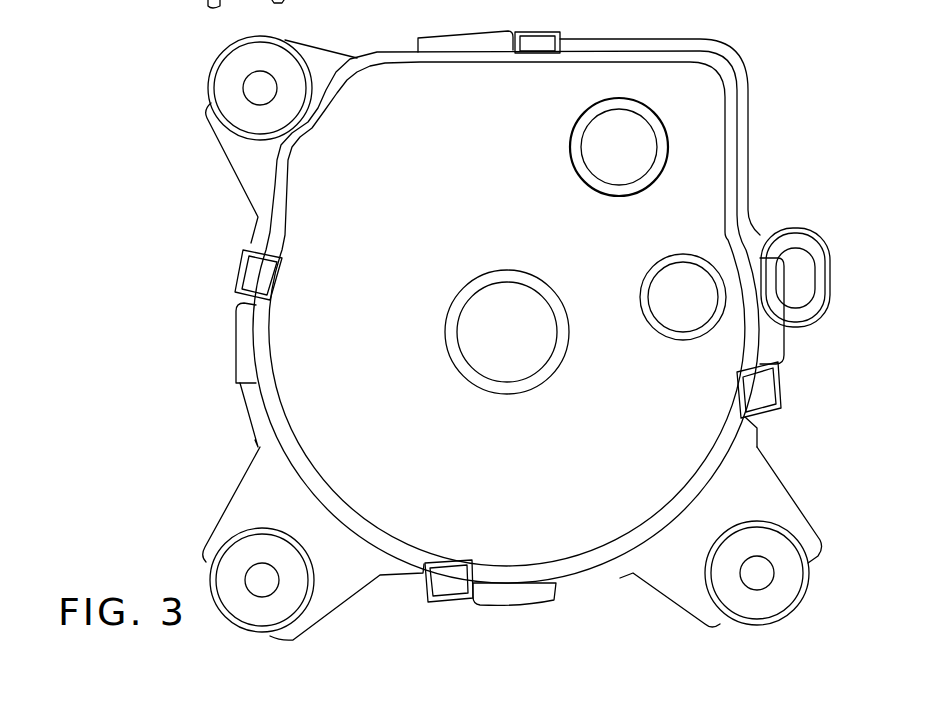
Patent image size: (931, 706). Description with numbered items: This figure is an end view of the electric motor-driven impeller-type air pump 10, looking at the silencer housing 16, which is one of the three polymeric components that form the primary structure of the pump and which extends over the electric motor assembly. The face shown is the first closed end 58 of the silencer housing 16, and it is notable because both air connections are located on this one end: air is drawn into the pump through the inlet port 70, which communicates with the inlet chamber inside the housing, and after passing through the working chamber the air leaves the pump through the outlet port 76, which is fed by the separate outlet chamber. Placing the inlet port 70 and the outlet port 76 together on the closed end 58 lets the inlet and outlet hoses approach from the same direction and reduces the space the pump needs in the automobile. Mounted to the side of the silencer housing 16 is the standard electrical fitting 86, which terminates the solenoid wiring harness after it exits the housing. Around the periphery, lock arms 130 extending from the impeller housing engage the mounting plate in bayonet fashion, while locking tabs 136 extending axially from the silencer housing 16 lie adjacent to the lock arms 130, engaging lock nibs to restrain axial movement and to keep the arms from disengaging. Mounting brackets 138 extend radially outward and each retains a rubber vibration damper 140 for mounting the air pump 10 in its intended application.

The air pump 10 is at (762, 163).
The silencer housing 16 is at (730, 82).
The first closed end 58 is at (682, 243).
The inlet port 70 is at (675, 303).
The outlet port 76 is at (573, 139).
The electrical fitting 86 is at (797, 273).
The lock arms 130 is at (477, 35).
The locking tabs 136 is at (535, 38).
The mounting brackets 138 is at (212, 137).
The rubber vibration dampers 140 is at (230, 78).